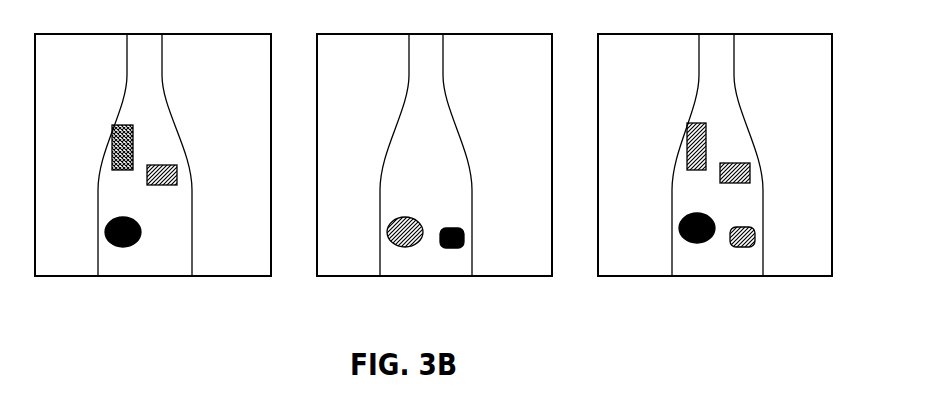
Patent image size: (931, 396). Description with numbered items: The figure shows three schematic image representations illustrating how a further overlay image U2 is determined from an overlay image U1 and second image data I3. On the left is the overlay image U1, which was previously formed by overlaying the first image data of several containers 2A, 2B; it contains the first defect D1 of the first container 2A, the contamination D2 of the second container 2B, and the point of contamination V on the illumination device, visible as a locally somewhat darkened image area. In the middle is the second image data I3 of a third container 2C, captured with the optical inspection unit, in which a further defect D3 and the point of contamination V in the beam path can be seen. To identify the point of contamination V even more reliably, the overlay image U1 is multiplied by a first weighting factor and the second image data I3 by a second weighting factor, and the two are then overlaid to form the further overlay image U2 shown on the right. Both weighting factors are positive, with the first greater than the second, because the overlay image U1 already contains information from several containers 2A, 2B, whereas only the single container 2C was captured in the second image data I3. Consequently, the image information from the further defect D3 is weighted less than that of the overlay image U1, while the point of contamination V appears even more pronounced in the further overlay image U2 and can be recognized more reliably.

The overlay image U1 is at (214, 276).
The second image data I3 is at (496, 276).
The further overlay image U2 is at (778, 276).
The first container 2A is at (730, 155).
The second container 2B is at (774, 155).
The third container 2C is at (445, 80).
The first defect D1 is at (750, 173).
The contamination D2 is at (706, 138).
The further defect D3 is at (465, 237).
The point of contamination V is at (392, 220).